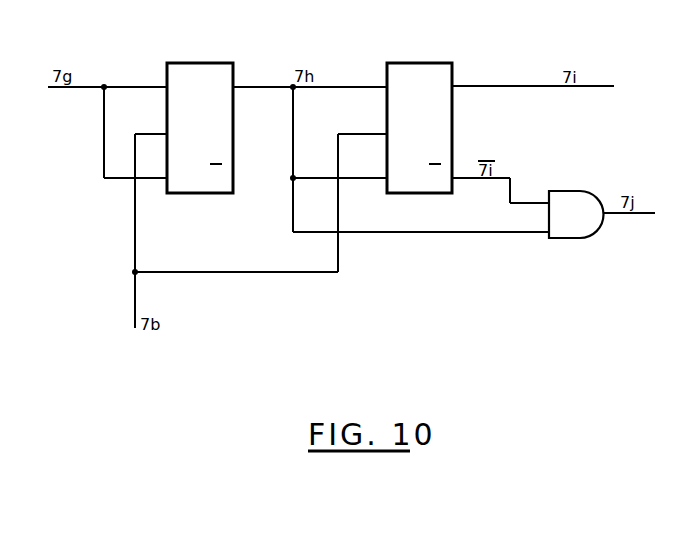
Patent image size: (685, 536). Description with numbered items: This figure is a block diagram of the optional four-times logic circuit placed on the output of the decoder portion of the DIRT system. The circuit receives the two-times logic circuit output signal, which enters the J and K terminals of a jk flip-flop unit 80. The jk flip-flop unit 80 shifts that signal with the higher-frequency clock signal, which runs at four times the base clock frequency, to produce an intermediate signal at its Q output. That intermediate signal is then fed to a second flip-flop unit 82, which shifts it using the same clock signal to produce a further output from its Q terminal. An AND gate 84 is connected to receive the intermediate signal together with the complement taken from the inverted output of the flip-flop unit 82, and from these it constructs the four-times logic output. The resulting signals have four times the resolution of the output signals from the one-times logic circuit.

The jk flip-flop unit 80 is at (190, 63).
The flip-flop unit 82 is at (414, 63).
The AND gate 84 is at (568, 191).